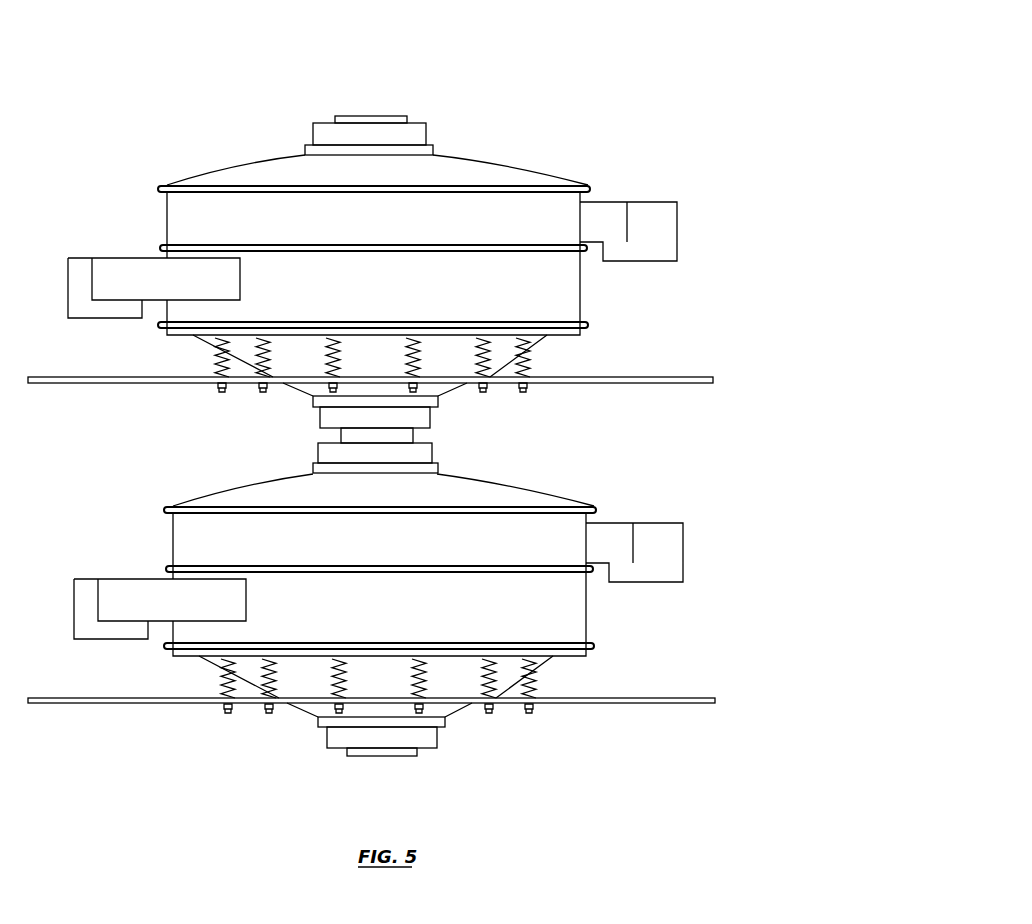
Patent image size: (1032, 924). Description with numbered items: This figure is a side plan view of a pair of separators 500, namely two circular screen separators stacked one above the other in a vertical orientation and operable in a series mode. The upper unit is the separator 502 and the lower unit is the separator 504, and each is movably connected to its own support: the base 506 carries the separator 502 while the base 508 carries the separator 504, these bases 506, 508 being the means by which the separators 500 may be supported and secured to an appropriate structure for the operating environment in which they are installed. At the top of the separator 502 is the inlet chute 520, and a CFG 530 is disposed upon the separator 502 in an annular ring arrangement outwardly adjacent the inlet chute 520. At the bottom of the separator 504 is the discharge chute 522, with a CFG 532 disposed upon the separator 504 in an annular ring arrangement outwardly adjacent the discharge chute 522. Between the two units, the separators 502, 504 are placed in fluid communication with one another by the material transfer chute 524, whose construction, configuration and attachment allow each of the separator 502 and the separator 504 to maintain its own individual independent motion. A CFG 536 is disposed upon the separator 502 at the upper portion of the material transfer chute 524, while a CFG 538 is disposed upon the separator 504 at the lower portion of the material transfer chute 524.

The pair of separators 500 is at (639, 41).
The separator 502 is at (605, 131).
The separator 504 is at (604, 461).
The base 506 is at (655, 365).
The base 508 is at (637, 683).
The inlet chute 520 is at (377, 103).
The discharge chute 522 is at (410, 761).
The material transfer chute 524 is at (325, 434).
The CFG 530 is at (430, 108).
The CFG 532 is at (321, 759).
The CFG 536 is at (444, 416).
The CFG 538 is at (446, 453).